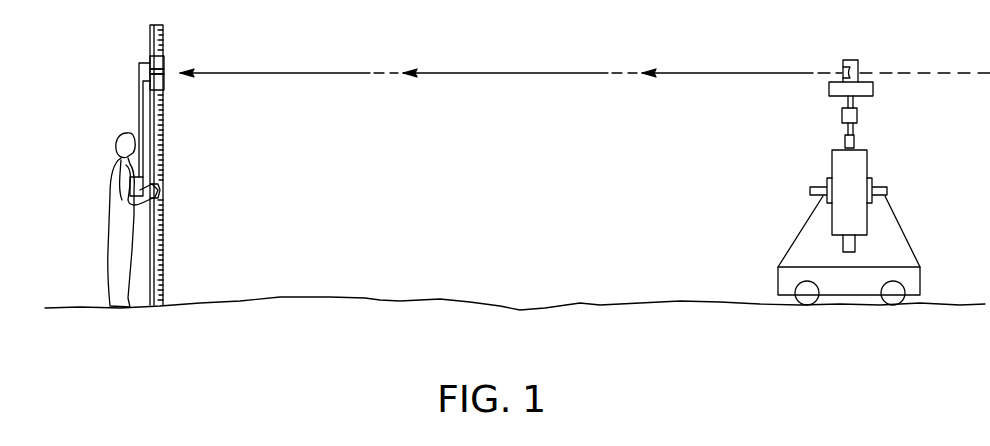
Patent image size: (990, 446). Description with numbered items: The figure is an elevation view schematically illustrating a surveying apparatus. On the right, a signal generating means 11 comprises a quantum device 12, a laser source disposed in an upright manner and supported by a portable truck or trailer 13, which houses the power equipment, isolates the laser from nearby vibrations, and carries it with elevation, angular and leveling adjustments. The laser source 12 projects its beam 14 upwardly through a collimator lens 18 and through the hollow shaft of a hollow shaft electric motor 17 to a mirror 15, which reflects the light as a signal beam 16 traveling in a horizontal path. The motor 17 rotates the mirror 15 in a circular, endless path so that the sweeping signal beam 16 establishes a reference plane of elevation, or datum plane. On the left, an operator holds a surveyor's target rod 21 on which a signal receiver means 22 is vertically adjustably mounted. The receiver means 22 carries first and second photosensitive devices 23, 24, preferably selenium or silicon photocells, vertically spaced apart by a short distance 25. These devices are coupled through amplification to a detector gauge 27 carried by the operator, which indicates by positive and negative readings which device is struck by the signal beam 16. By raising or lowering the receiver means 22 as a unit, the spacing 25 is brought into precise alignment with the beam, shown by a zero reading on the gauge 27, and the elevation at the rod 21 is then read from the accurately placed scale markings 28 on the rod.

The signal generating means 11 is at (867, 166).
The quantum device 12 is at (862, 160).
The portable truck or trailer 13 is at (902, 267).
The beam 14 is at (856, 103).
The mirror 15 is at (856, 63).
The signal beam 16 is at (741, 73).
The hollow shaft electric motor 17 is at (873, 84).
The collimator lens 18 is at (857, 118).
The surveyor's target rod 21 is at (163, 42).
The signal receiver means 22 is at (180, 73).
The first photosensitive device 23 is at (190, 61).
The second photosensitive device 24 is at (164, 77).
The spacing 25 is at (164, 71).
The detector gauge 27 is at (162, 176).
The scale markings 28 is at (163, 132).